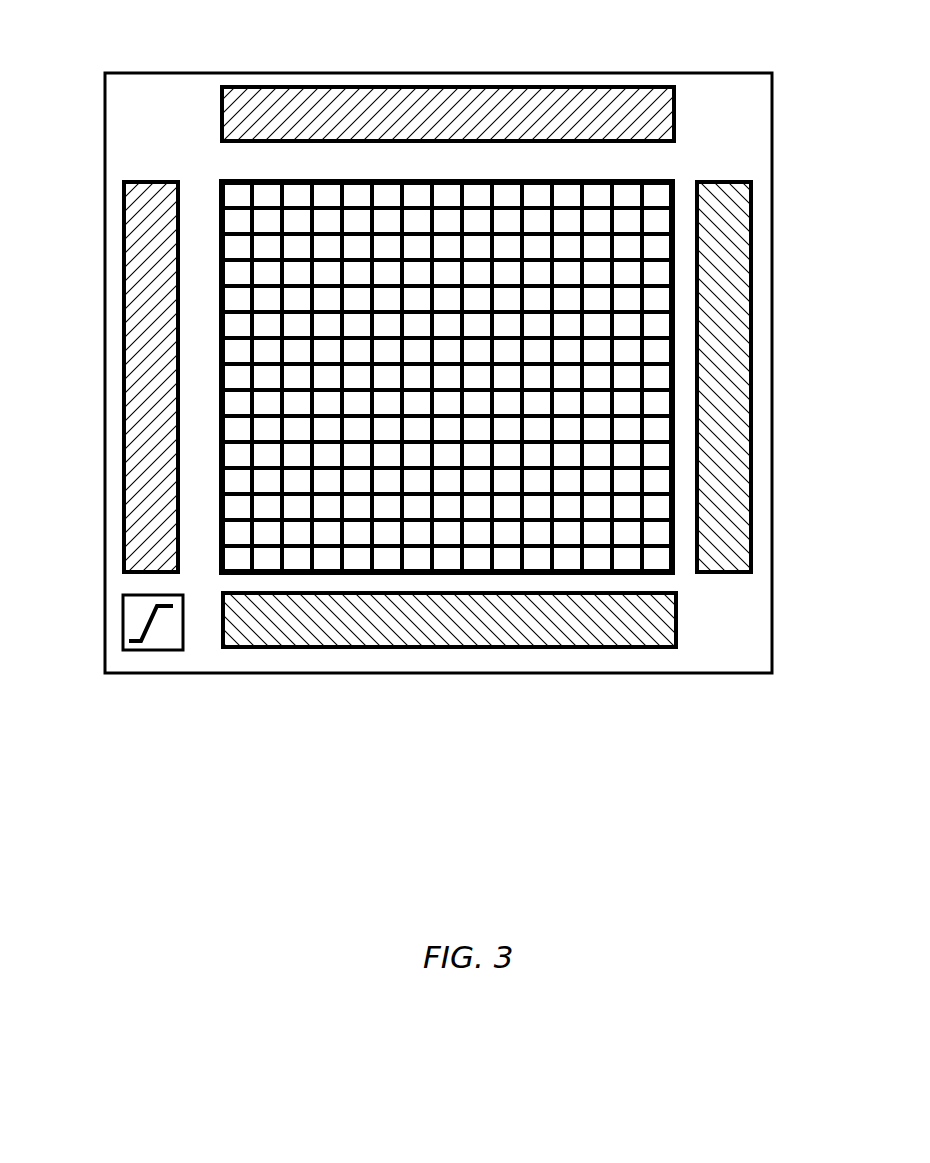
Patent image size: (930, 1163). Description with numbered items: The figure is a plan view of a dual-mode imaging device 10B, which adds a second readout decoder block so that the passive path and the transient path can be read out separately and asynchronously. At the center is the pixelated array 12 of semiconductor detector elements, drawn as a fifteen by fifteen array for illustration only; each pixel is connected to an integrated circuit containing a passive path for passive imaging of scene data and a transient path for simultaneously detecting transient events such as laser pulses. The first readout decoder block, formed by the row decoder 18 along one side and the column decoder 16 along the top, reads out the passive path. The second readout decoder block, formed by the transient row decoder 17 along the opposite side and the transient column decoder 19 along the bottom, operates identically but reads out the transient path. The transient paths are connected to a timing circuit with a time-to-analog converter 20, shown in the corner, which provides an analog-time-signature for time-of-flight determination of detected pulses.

The device 10B is at (660, 812).
The pixelated array 12 is at (212, 178).
The column decoder 16 is at (515, 88).
The transient row decoder 17 is at (748, 342).
The row decoder 18 is at (127, 403).
The transient column decoder 19 is at (393, 648).
The time-to-analog converter 20 is at (123, 635).